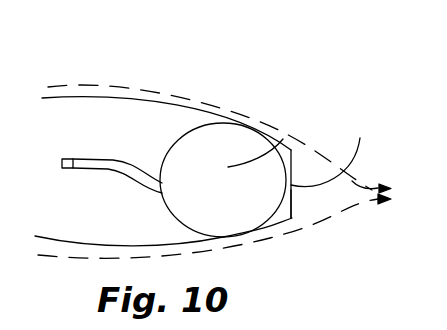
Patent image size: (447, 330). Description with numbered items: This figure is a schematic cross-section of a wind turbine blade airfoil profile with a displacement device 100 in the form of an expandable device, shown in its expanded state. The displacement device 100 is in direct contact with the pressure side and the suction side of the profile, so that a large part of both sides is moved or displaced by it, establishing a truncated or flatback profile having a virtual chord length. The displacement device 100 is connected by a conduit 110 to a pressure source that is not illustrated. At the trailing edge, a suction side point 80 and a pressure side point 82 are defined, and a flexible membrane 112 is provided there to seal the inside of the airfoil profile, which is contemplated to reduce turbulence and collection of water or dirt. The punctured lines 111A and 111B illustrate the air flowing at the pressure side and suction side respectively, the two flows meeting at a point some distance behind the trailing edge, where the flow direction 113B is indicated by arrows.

The housing 80 is at (302, 147).
The outlet 82 is at (291, 218).
The roller 100 is at (277, 140).
The cable 110 is at (61, 163).
The lower boundary line 111A is at (322, 222).
The upper boundary line 111B is at (200, 98).
The curved edge 112 is at (330, 148).
The flow direction 113B is at (369, 183).